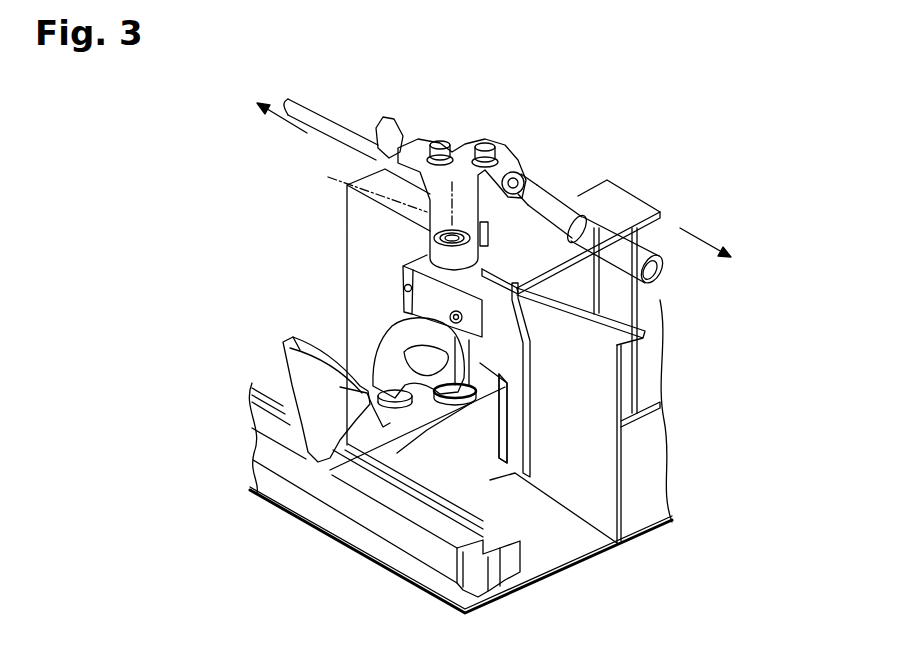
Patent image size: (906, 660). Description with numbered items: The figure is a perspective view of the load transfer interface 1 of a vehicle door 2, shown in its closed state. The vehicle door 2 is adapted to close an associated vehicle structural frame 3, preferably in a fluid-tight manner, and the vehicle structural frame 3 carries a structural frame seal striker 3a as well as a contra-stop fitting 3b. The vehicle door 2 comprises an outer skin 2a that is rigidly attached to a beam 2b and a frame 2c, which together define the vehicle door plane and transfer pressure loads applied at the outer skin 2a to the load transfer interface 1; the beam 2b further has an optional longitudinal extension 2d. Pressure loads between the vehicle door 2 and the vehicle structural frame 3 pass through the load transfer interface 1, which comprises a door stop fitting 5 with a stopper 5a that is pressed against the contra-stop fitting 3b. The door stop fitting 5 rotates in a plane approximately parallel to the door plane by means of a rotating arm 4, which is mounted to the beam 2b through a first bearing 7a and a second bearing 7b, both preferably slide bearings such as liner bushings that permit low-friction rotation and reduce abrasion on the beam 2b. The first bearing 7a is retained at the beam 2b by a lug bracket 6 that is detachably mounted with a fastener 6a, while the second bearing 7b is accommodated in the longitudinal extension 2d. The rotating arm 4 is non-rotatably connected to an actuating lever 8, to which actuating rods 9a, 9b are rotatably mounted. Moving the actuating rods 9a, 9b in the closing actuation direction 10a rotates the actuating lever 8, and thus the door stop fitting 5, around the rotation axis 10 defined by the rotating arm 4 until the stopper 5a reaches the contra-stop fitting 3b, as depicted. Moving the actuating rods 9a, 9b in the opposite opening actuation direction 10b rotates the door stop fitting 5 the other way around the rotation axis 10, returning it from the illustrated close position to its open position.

The load transfer interface 1 is at (250, 349).
The vehicle door 2 is at (679, 432).
The outer skin 2a is at (650, 497).
The beam 2b is at (624, 203).
The frame 2c is at (588, 437).
The longitudinal extension 2d is at (440, 528).
The vehicle structural frame 3 is at (234, 406).
The structural frame seal striker 3a is at (270, 460).
The contra-stop fitting 3b is at (372, 378).
The rotating arm 4 is at (497, 373).
The door stop fitting 5 is at (402, 340).
The stopper 5a is at (348, 455).
The lug bracket 6 is at (440, 340).
The fastener 6a is at (403, 287).
The first bearing 7a is at (403, 265).
The second bearing 7b is at (425, 462).
The actuating lever 8 is at (375, 172).
The actuating rod 9a is at (363, 122).
The actuating rod 9b is at (662, 270).
The rotation axis 10 is at (373, 194).
The closing actuation direction 10a is at (282, 118).
The opening actuation direction 10b is at (703, 240).